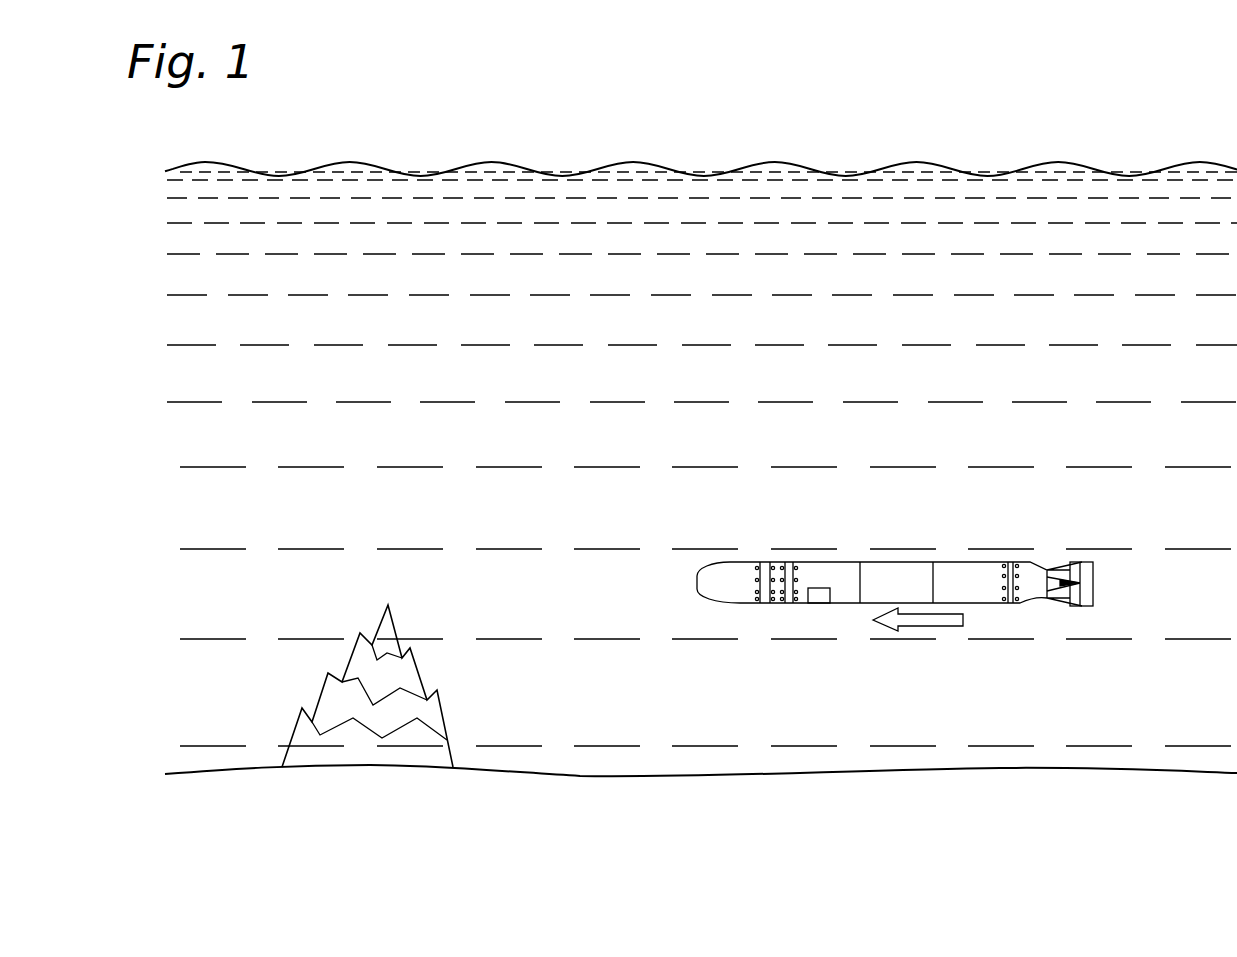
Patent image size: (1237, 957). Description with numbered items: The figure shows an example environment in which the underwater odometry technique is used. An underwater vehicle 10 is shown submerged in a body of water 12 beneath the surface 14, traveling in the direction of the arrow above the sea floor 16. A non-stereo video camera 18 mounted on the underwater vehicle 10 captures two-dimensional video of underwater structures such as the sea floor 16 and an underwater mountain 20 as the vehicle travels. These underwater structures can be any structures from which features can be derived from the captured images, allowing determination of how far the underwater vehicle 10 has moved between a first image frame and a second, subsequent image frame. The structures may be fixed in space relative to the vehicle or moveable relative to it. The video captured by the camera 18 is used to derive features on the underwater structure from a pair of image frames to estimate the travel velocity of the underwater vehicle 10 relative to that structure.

The underwater vehicle 10 is at (848, 556).
The body of water 12 is at (666, 381).
The surface 14 is at (512, 166).
The sea floor 16 is at (1133, 770).
The non-stereo video camera 18 is at (817, 603).
The underwater mountain 20 is at (445, 723).